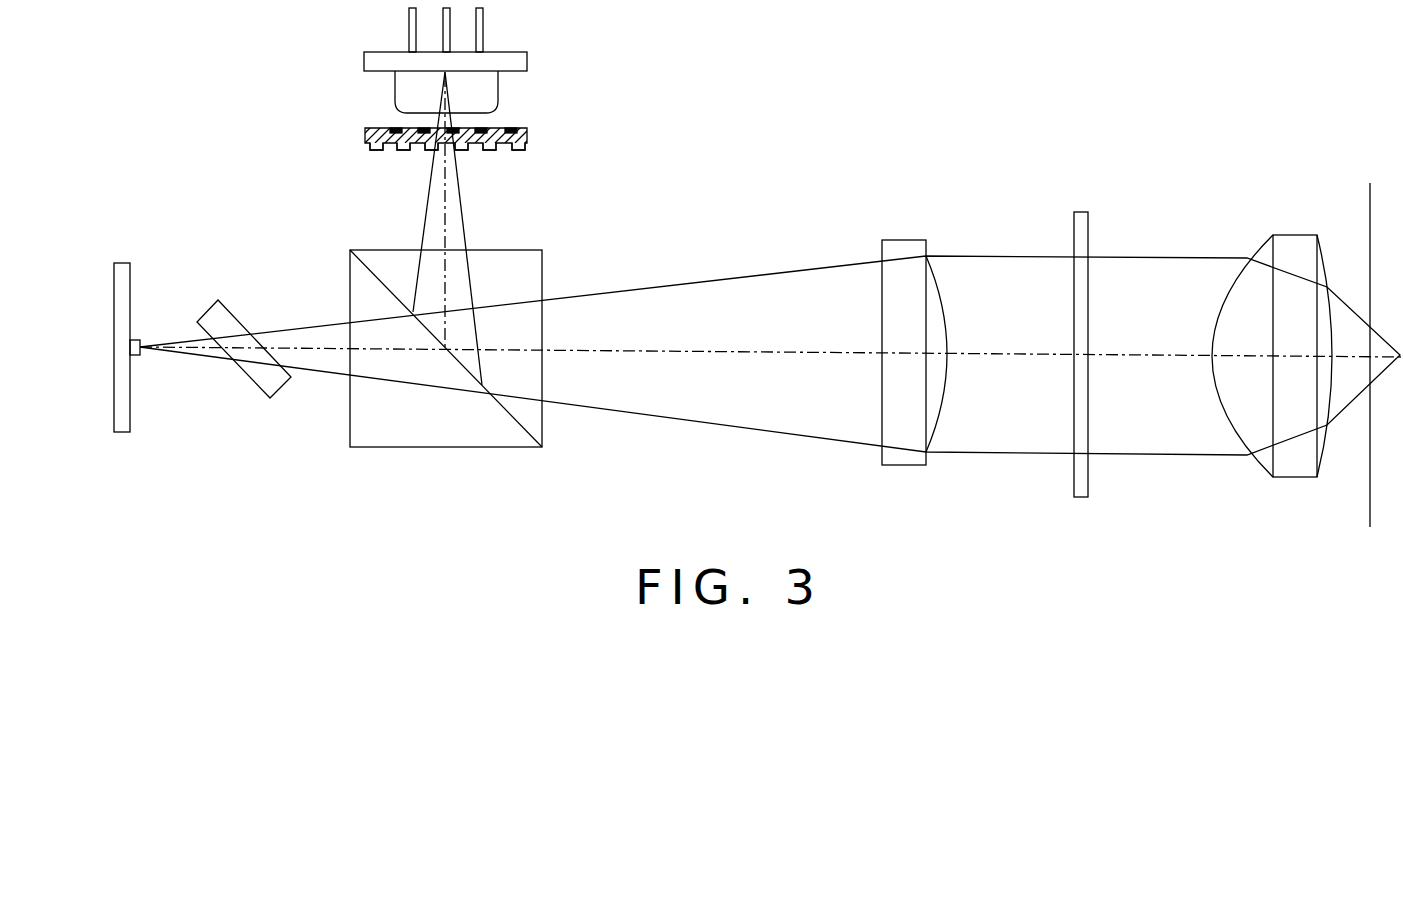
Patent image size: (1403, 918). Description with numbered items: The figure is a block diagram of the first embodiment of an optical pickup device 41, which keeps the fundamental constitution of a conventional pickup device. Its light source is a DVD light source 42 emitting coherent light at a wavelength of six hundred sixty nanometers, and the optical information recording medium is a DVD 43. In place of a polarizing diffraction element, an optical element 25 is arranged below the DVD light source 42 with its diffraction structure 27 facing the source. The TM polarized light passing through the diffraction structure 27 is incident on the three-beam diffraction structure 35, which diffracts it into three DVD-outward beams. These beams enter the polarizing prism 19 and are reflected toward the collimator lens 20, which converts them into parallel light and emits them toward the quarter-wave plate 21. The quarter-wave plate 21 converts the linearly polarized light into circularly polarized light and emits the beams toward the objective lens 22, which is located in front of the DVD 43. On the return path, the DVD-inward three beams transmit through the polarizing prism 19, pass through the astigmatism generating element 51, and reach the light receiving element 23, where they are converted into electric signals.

The optical pickup device 41 is at (178, 190).
The light receiving element 23 is at (120, 262).
The astigmatism generating element 51 is at (247, 376).
The polarizing prism 19 is at (432, 449).
The DVD light source 42 is at (394, 85).
The optical element 25 is at (437, 134).
The diffraction structure 27 is at (510, 125).
The three-beam diffraction structure 35 is at (513, 158).
The collimator lens 20 is at (903, 240).
The quarter-wave plate 21 is at (1083, 212).
The objective lens 22 is at (1297, 235).
The DVD 43 is at (1368, 218).